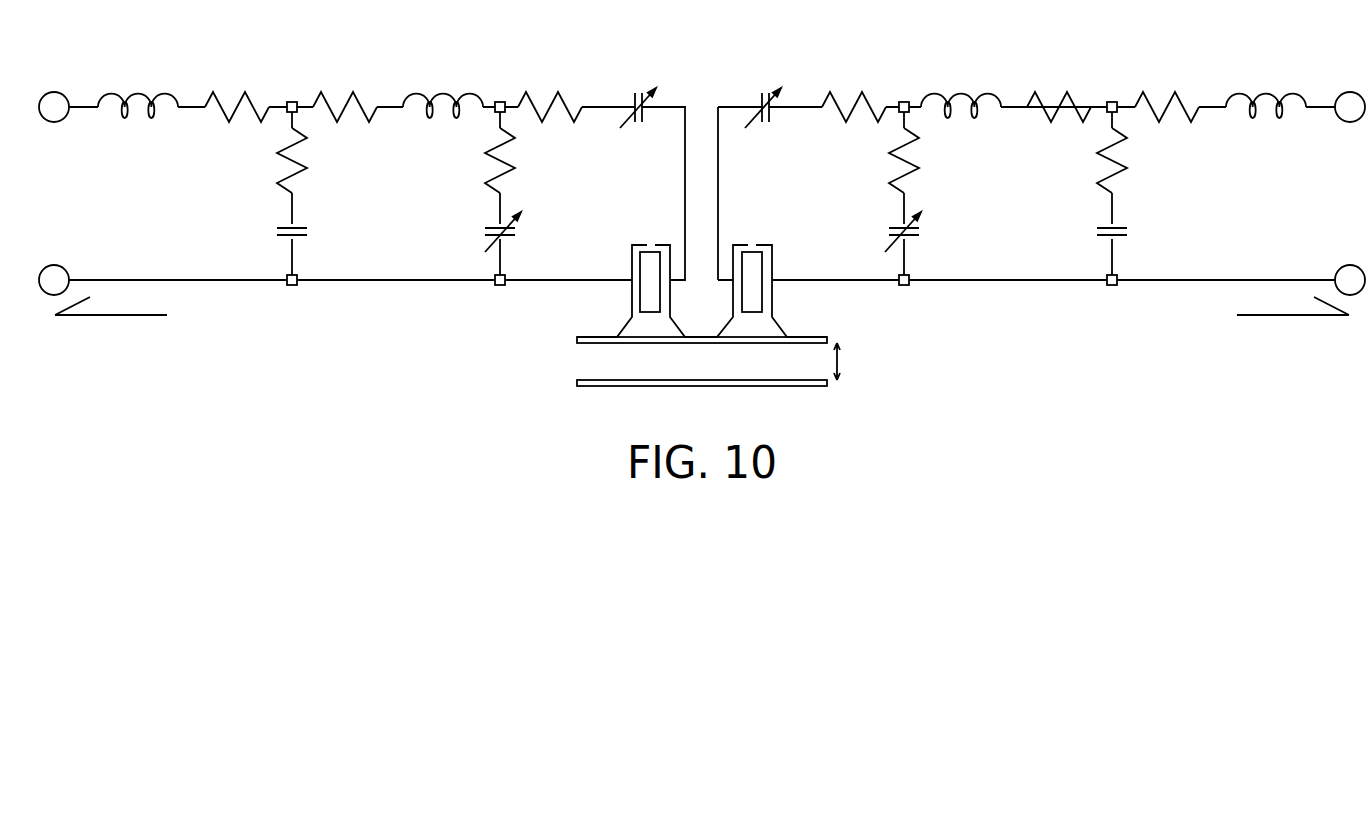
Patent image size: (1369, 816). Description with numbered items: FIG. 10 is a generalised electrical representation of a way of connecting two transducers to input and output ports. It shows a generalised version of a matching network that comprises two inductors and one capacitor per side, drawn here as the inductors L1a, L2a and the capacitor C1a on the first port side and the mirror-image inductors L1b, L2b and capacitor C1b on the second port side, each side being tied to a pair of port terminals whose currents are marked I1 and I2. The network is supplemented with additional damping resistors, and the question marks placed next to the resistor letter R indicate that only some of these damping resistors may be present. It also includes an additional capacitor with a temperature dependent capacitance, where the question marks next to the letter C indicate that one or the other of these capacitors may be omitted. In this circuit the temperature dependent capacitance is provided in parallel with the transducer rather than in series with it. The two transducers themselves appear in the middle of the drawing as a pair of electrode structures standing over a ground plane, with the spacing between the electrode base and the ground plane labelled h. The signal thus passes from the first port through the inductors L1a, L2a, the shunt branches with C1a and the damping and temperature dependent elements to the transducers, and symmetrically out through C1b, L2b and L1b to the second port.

The first series inductor (port 1 side) L1a is at (138, 87).
The second series inductor (port 1 side) L2a is at (443, 87).
The shunt capacitor (port 1 side) C1a is at (313, 236).
The first series inductor (port 2 side) L1b is at (1266, 87).
The second series inductor (port 2 side) L2b is at (961, 87).
The shunt capacitor (port 2 side) C1b is at (1133, 236).
The port 1 current I1 is at (111, 302).
The port 2 current I2 is at (1293, 302).
The electrode height above ground plane h is at (847, 361).